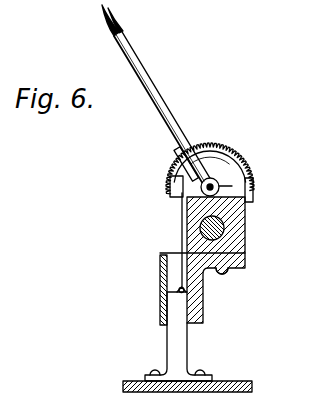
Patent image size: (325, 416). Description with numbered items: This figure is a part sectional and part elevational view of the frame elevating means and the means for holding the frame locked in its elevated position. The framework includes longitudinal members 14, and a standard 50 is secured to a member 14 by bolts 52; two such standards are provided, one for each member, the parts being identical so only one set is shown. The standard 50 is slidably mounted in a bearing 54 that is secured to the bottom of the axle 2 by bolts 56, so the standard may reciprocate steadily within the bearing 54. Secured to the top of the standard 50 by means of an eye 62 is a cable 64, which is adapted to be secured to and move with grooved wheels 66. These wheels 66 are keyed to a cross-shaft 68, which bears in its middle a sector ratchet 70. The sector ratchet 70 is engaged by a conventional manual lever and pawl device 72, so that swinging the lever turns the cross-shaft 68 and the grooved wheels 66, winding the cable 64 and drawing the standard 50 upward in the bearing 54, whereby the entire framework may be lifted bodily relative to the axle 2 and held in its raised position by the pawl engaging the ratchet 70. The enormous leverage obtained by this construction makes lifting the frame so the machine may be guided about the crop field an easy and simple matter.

The axle 2 is at (246, 226).
The longitudinal members 14 is at (249, 385).
The standard 50 is at (184, 354).
The bolts 52 is at (153, 370).
The bearing 54 is at (204, 325).
The bolts 56 is at (230, 275).
The eye 62 is at (178, 294).
The cable 64 is at (181, 229).
The grooved wheels 66 is at (219, 186).
The cross-shaft 68 is at (214, 184).
The sector ratchet 70 is at (222, 146).
The manual lever and pawl device 72 is at (173, 100).